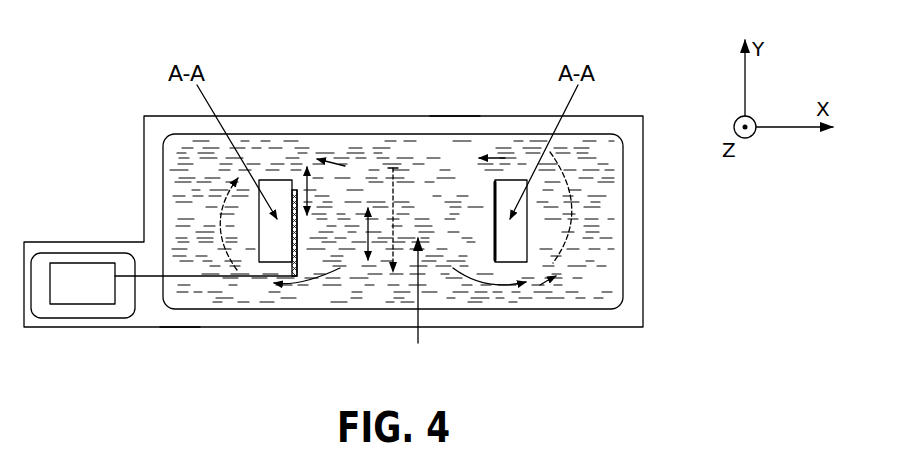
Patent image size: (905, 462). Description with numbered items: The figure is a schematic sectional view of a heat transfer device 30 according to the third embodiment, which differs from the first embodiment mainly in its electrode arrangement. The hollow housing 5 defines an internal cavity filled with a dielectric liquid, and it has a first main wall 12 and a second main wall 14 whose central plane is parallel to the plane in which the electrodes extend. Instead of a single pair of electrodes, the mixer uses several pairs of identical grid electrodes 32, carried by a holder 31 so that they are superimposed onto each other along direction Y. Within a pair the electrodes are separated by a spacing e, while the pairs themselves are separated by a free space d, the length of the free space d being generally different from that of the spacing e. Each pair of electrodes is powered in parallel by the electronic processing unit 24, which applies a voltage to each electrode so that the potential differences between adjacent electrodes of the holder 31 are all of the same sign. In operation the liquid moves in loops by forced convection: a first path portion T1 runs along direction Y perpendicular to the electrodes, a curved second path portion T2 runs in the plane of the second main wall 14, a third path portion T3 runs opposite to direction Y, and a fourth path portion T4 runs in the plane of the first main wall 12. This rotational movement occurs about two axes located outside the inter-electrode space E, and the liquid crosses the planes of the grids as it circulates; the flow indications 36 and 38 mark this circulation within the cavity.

The hollow housing 5 is at (645, 287).
The main wall 12 is at (455, 113).
The main wall 14 is at (315, 329).
The electronic processing unit 24 is at (83, 285).
The heat transfer device 30 is at (177, 353).
The holder 31 is at (273, 180).
The electrode 32 is at (354, 190).
The fluid flow 36 is at (562, 157).
The fluid flow region 38 is at (567, 273).
The first path portion T1 is at (398, 203).
The second path portion T2 is at (503, 288).
The third path portion T3 is at (576, 228).
The fourth path portion T4 is at (504, 155).
The free space d is at (370, 228).
The spacing e is at (316, 164).
The inter-electrode space E is at (421, 320).